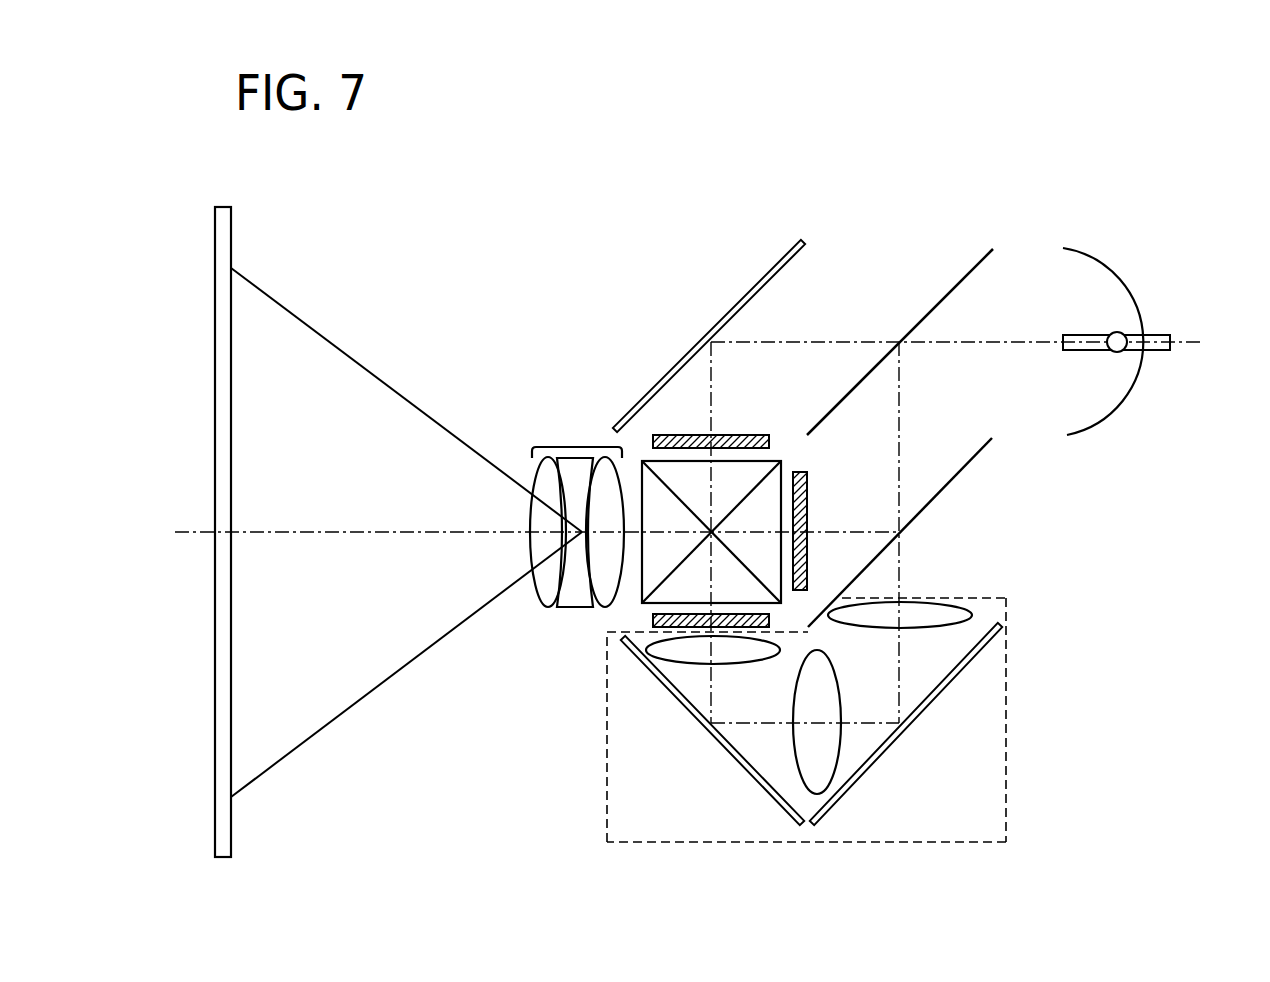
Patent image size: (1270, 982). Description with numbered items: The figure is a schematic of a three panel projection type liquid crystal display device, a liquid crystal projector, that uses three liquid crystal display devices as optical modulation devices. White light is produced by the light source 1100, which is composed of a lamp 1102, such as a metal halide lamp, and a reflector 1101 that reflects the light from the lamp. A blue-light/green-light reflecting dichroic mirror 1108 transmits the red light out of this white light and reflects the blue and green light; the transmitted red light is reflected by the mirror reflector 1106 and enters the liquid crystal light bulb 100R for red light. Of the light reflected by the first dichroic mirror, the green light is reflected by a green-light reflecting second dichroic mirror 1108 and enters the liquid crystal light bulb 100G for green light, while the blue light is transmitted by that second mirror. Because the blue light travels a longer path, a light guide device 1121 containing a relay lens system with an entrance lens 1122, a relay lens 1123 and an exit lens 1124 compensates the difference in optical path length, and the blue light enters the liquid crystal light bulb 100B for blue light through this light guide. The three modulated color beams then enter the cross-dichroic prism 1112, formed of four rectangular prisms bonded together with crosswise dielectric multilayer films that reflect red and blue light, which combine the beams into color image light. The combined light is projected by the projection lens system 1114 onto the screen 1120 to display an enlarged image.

The light source 1100 is at (1100, 236).
The reflector 1101 is at (1123, 393).
The lamp 1102 is at (1120, 332).
The mirror reflector 1106 is at (737, 298).
The dichroic mirror 1108 is at (947, 288).
The cross-dichroic prism 1112 is at (658, 567).
The projection lens system 1114 is at (570, 447).
The screen 1120 is at (231, 748).
The light guide device 1121 is at (1006, 765).
The entrance lens 1122 is at (930, 612).
The relay lens 1123 is at (830, 740).
The exit lens 1124 is at (667, 648).
The liquid crystal light bulb for red light 100R is at (730, 432).
The liquid crystal light bulb for green light 100G is at (810, 510).
The liquid crystal light bulb for blue light 100B is at (653, 625).